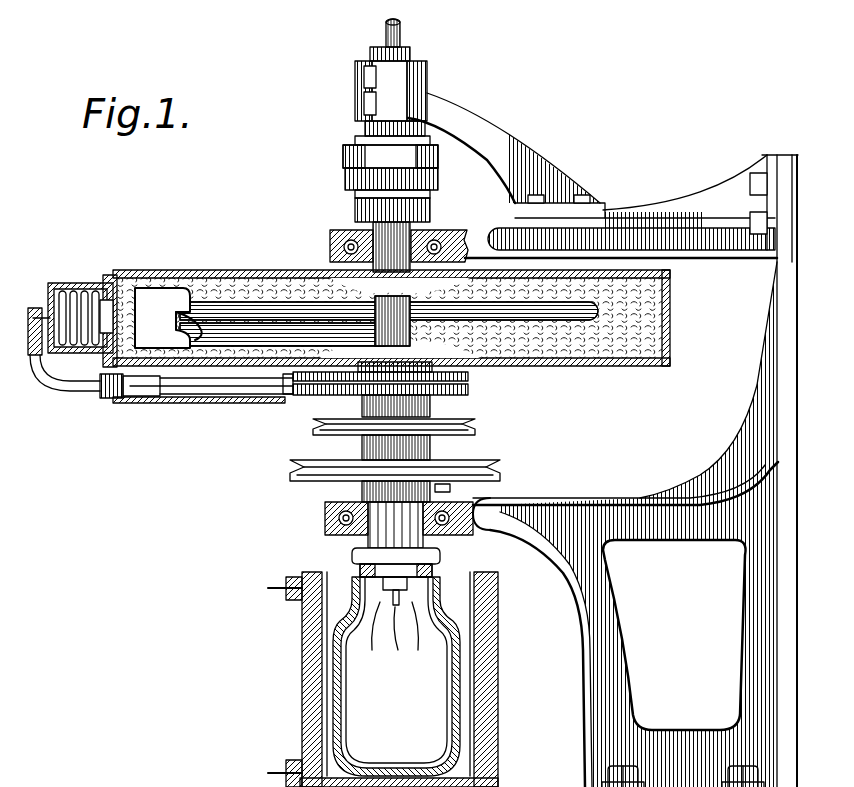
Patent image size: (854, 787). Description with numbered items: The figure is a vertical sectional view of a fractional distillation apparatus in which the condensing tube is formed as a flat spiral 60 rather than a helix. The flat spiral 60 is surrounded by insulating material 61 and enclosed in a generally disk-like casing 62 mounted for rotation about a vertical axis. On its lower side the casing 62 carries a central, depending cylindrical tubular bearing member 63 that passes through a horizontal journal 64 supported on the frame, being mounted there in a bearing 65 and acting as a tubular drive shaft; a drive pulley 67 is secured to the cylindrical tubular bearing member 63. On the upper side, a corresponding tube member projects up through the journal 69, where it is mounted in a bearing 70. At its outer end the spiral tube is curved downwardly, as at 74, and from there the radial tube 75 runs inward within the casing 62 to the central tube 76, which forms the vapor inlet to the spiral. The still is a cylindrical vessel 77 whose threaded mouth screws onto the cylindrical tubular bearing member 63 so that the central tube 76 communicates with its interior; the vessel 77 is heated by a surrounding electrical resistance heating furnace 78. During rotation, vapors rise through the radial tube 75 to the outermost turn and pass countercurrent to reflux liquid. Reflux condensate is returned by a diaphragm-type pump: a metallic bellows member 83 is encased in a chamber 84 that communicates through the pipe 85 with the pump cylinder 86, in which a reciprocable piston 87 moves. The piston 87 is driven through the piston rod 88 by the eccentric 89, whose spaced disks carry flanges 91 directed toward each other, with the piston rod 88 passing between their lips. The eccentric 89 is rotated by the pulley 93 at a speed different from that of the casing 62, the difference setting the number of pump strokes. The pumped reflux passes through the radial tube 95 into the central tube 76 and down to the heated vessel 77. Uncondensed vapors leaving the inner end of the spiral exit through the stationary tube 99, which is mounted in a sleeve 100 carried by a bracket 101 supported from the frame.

The flat spiral 60 is at (222, 317).
The insulating material 61 is at (607, 337).
The casing 62 is at (670, 300).
The cylindrical tubular bearing member 63 is at (388, 530).
The horizontal journal 64 is at (490, 508).
The bearing 65 is at (345, 502).
The drive pulley 67 is at (292, 467).
The journal 69 is at (455, 231).
The bearing 70 is at (355, 231).
The downwardly curved tube portion 74 is at (208, 317).
The radial tube 75 is at (287, 330).
The central tube 76 is at (408, 582).
The vessel 77 is at (338, 667).
The electrical resistance heating furnace 78 is at (493, 666).
The metallic bellows member 83 is at (72, 292).
The chamber 84 is at (48, 283).
The pipe 85 is at (50, 383).
The pump cylinder 86 is at (118, 407).
The piston 87 is at (143, 396).
The piston rod 88 is at (213, 404).
The eccentric 89 is at (469, 387).
The flanges 91 is at (338, 380).
The pulley 93 is at (472, 423).
The radial tube 95 is at (297, 400).
The stationary tube 99 is at (398, 35).
The sleeve 100 is at (410, 53).
The bracket 101 is at (410, 90).